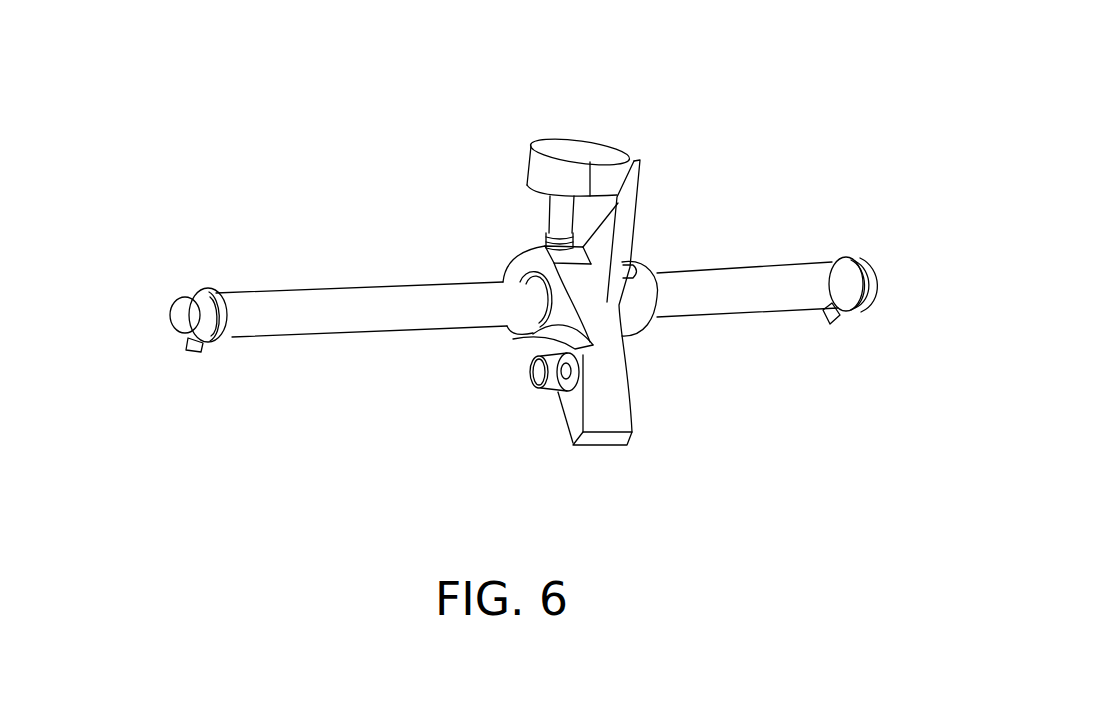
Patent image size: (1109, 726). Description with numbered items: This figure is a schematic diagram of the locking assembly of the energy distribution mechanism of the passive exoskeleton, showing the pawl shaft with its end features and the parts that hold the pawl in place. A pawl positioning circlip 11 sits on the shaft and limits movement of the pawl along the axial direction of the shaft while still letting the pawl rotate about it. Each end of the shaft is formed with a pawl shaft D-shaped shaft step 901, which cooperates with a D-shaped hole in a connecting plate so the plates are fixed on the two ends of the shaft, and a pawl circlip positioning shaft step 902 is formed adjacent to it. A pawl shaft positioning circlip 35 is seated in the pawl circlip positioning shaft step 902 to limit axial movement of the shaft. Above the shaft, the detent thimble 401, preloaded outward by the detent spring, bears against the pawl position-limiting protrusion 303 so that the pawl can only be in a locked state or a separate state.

The pawl positioning circlip 11 is at (518, 331).
The pawl shaft positioning circlip 35 is at (845, 258).
The pawl position-limiting protrusion 303 is at (638, 162).
The detent thimble 401 is at (548, 236).
The pawl shaft D-shaped shaft step 901 is at (173, 318).
The pawl circlip positioning shaft step 902 is at (198, 290).